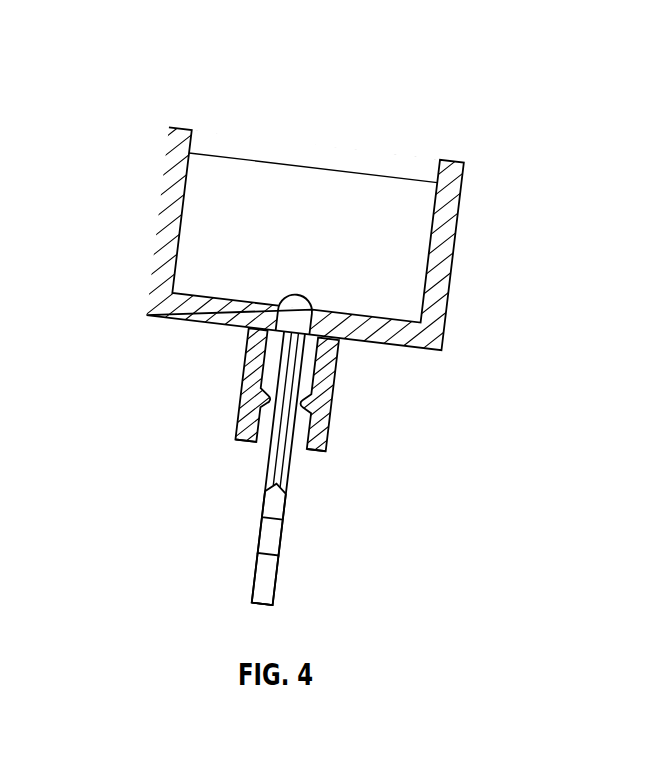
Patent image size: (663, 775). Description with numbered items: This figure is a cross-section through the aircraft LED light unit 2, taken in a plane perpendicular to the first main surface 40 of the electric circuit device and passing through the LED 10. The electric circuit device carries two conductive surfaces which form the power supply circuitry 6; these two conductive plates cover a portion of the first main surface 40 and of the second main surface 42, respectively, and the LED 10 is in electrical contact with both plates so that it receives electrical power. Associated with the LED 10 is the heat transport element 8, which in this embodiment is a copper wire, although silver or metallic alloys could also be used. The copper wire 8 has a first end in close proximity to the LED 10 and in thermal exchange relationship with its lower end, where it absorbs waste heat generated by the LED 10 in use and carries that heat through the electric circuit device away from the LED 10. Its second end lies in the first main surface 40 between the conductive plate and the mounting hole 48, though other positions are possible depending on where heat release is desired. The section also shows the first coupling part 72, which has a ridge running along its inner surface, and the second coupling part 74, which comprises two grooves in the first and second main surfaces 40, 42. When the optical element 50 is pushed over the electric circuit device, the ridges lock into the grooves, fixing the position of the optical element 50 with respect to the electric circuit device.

The aircraft LED light unit 2 is at (109, 59).
The optical element 50 is at (450, 258).
The LED 10 is at (296, 292).
The heat transport element 8 is at (286, 493).
The mounting hole 48 is at (258, 537).
The second main surface 42 is at (280, 580).
The first main surface 40 is at (253, 585).
The second coupling part 74 is at (226, 378).
The first coupling part 72 is at (337, 380).
The power supply circuitry 6 is at (254, 444).